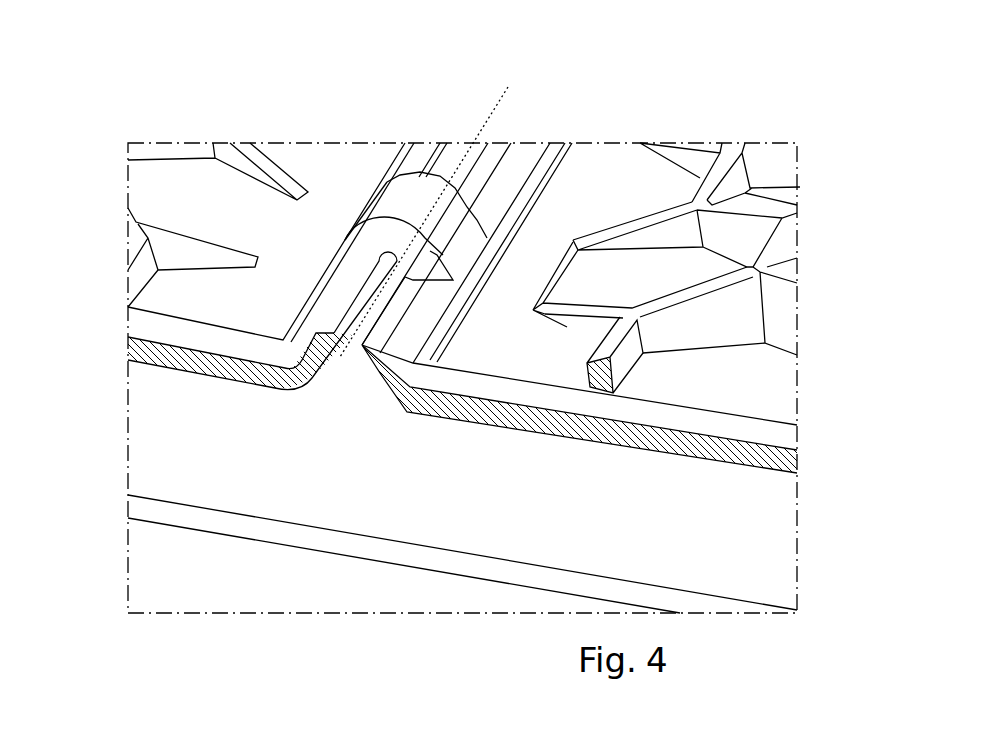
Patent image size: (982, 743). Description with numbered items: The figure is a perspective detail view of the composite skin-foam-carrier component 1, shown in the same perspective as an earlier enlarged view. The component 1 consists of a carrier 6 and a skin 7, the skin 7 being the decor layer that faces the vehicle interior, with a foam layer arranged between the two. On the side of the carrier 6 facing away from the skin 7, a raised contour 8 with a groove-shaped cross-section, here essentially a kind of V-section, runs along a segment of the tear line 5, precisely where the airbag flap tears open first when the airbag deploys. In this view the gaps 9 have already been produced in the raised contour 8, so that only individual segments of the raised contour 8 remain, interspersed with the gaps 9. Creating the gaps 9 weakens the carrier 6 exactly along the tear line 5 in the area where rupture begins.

The composite skin-foam-carrier component 1 is at (818, 191).
The tear line 5 is at (487, 118).
The carrier 6 is at (165, 358).
The skin 7 is at (160, 513).
The raised contour 8 is at (407, 207).
The gaps 9 is at (413, 262).